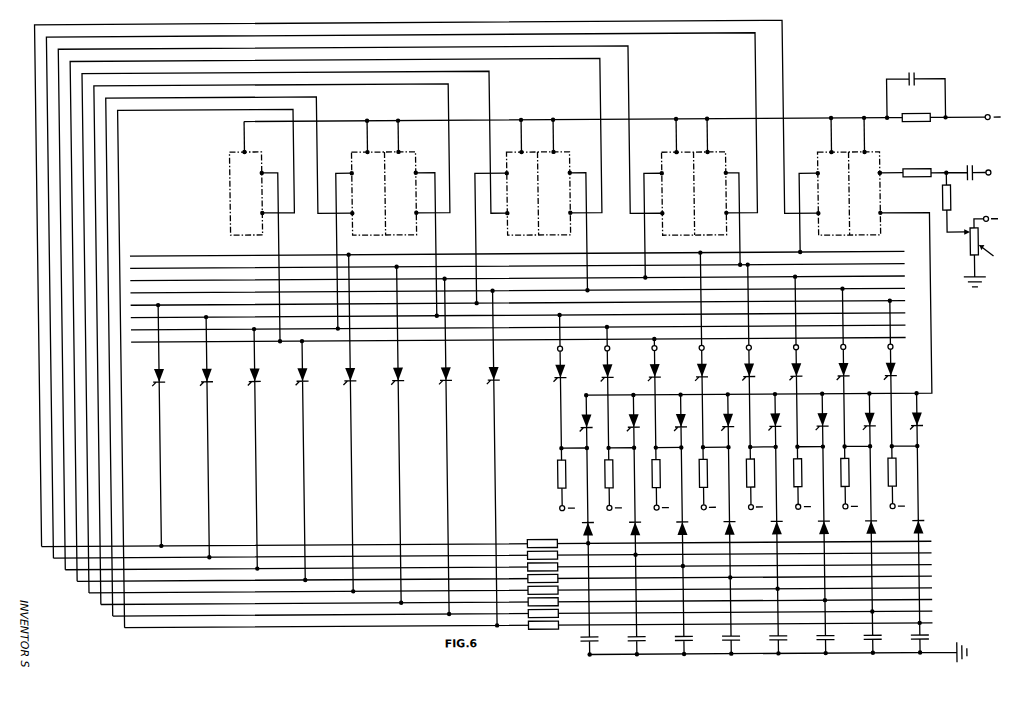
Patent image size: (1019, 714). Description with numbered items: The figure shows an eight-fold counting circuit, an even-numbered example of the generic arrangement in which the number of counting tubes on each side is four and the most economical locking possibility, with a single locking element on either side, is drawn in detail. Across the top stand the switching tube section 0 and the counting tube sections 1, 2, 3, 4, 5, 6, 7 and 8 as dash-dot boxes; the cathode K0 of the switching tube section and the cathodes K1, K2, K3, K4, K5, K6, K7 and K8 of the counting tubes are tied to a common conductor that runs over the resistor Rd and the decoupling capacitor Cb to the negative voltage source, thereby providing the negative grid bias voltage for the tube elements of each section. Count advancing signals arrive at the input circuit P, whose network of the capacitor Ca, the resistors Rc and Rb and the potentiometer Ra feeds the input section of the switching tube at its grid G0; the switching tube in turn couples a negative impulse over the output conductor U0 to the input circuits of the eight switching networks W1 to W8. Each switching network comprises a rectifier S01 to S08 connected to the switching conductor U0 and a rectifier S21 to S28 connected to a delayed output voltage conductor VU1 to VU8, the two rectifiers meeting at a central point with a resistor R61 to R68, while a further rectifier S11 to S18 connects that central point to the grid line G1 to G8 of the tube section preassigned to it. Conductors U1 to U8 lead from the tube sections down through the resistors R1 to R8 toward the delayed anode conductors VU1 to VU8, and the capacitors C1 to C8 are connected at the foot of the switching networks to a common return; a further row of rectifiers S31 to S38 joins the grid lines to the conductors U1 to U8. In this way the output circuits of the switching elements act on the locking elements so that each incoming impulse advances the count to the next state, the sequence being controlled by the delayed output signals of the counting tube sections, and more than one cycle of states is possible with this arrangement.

The cathode of the switching tube section K0 is at (872, 135).
The cathode of the counting tube K1 is at (839, 135).
The cathode of the counting tube K2 is at (715, 135).
The cathode of the counting tube K3 is at (684, 136).
The cathode of the counting tube K4 is at (561, 135).
The cathode of the counting tube K5 is at (529, 136).
The cathode of the counting tube K6 is at (405, 136).
The cathode of the counting tube K7 is at (374, 137).
The cathode of the counting tube K8 is at (251, 137).
The switching tube section 0 is at (857, 193).
The counting tube 1 is at (849, 193).
The counting tube 2 is at (702, 193).
The counting tube 3 is at (694, 193).
The counting tube 4 is at (546, 193).
The counting tube 5 is at (538, 193).
The counting tube 6 is at (392, 193).
The counting tube 7 is at (383, 193).
The counting tube 8 is at (245, 193).
The decoupling capacitor Cb is at (915, 84).
The resistor Rd is at (916, 126).
The resistor Rc is at (913, 182).
The capacitor Ca is at (965, 163).
The resistor Rb is at (955, 202).
The potentiometer Ra is at (981, 251).
The input circuit P is at (994, 172).
The gate output G0 is at (886, 162).
The output conductor U0 is at (766, 312).
The gate line G1 is at (525, 256).
The gate line G8 is at (526, 343).
The switching network W1 is at (569, 350).
The switching network W8 is at (882, 349).
The thyristor S31 is at (153, 425).
The thyristor S38 is at (503, 457).
The rectifier S11 is at (569, 381).
The rectifier S18 is at (899, 372).
The rectifier S01 is at (578, 421).
The rectifier S08 is at (926, 419).
The resistor R61 is at (558, 478).
The resistor R68 is at (887, 476).
The rectifier S21 is at (580, 542).
The rectifier S28 is at (908, 540).
The delayed anode conductor VU1 is at (945, 544).
The delayed anode conductor VU8 is at (945, 626).
The capacitor C1 is at (583, 645).
The capacitor C8 is at (927, 645).
The resistor R1 is at (542, 536).
The resistor R8 is at (543, 635).
The input line U1 is at (474, 287).
The input line U8 is at (517, 372).